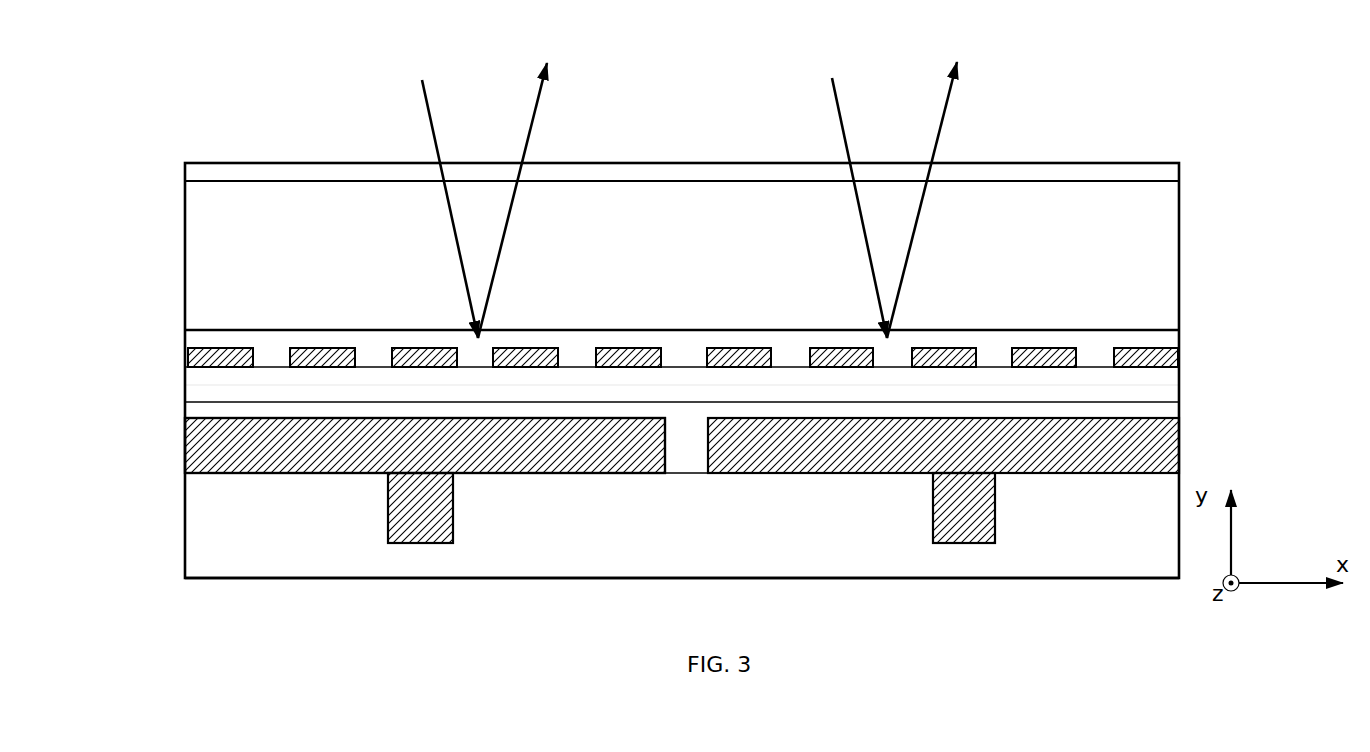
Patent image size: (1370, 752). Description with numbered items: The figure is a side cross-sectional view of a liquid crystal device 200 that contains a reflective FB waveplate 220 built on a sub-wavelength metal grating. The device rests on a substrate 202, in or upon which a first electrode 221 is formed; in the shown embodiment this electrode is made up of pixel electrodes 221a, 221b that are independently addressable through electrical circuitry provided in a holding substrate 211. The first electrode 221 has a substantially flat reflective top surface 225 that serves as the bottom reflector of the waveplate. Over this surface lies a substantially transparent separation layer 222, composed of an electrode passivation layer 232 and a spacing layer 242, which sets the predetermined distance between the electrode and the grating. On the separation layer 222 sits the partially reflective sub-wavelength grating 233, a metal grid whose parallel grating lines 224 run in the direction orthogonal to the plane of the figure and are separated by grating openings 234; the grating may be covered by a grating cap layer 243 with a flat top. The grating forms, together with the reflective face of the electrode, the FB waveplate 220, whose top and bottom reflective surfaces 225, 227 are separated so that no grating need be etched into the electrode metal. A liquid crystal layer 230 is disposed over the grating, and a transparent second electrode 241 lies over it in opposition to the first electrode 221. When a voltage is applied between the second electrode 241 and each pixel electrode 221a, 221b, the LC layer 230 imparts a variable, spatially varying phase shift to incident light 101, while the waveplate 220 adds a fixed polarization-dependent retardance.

The liquid crystal (LC) device 200 is at (690, 60).
The light 101 is at (537, 117).
The second electrode 241 is at (190, 171).
The liquid crystal (LC) layer 230 is at (682, 266).
The grating lines 224 is at (425, 360).
The top reflective surface 227 is at (328, 347).
The grating openings 234 is at (380, 357).
The grating cap layer 243 is at (567, 340).
The electrode passivation layer 232 is at (788, 408).
The spacing layer 242 is at (194, 393).
The reflective top surface 225 is at (503, 415).
The partially reflective sub-wavelength grating 233 is at (1188, 358).
The separation layer 222 is at (1211, 367).
The reflective FB waveplate 220 is at (1284, 330).
The first electrode 221 is at (1202, 446).
The substrate 202 is at (152, 408).
The pixel electrode 221a is at (335, 475).
The pixel electrode 221b is at (798, 473).
The holding substrate 211 is at (610, 538).